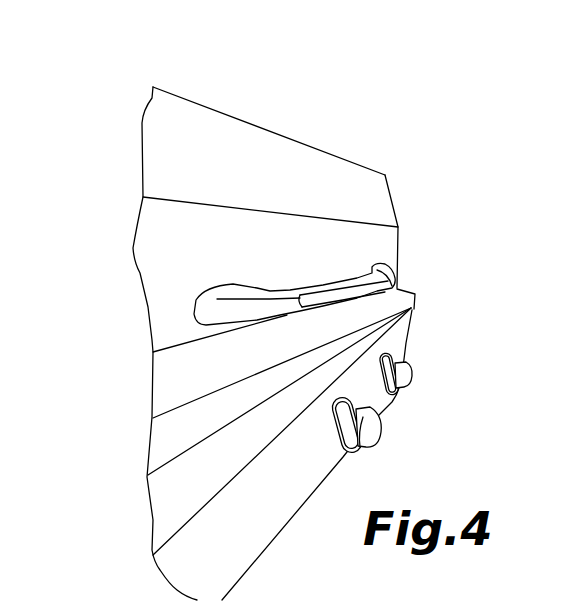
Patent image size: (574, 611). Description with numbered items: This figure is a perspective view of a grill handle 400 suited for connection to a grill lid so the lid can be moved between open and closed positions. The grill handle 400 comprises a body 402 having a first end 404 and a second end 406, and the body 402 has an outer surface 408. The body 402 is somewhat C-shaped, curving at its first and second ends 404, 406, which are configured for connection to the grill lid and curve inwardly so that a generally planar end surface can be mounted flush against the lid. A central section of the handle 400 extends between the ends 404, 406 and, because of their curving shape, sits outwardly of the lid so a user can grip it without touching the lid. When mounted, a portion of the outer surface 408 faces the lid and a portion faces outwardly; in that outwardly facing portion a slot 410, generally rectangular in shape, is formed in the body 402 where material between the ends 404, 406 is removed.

The grill handle 400 is at (281, 253).
The body 402 is at (252, 292).
The first end 404 is at (186, 315).
The second end 406 is at (383, 257).
The outer surface 408 is at (277, 310).
The slot 410 is at (413, 308).